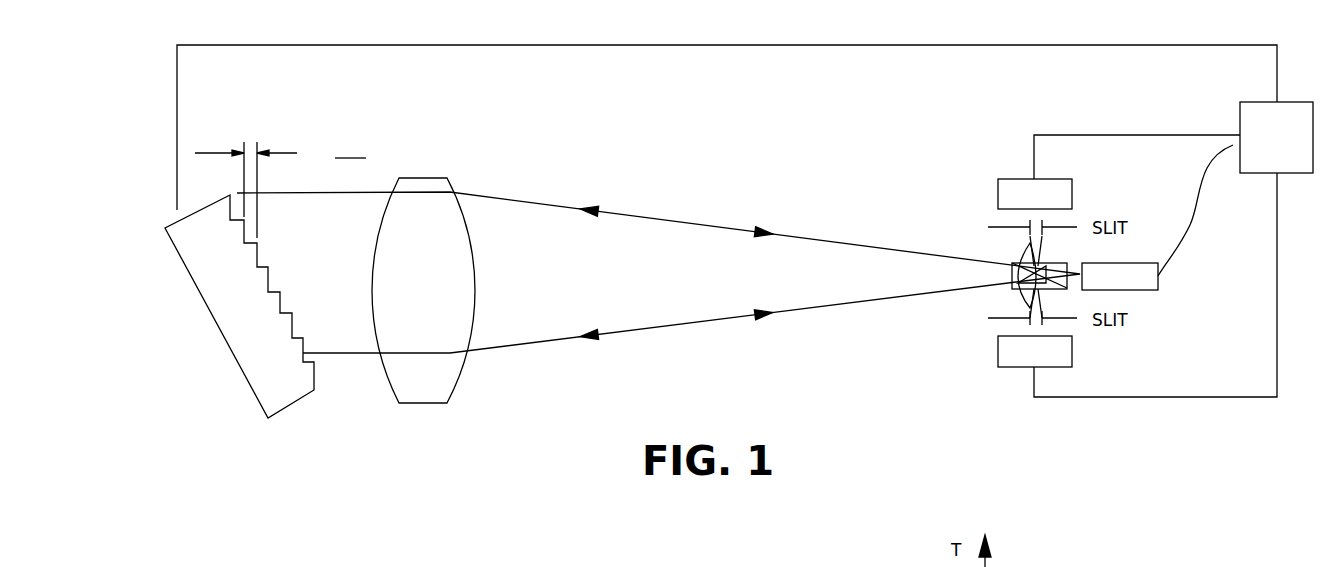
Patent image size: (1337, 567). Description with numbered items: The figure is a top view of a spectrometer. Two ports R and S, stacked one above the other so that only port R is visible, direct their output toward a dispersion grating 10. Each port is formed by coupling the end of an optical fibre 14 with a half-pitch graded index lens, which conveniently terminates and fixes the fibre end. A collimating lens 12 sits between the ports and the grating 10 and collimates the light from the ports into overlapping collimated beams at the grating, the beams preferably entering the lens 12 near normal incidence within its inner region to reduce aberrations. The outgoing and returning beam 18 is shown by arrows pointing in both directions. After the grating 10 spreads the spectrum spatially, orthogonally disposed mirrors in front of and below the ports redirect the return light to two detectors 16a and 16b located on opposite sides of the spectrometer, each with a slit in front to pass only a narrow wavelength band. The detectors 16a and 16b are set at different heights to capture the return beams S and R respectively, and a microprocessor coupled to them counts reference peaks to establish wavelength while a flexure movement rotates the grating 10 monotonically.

The dispersion grating 10 is at (247, 352).
The collimating lens 12 is at (1152, 283).
The optical fibre 14 is at (1195, 212).
The detector 16a is at (998, 227).
The detector 16b is at (998, 354).
The outgoing and returning beam 18 is at (712, 226).